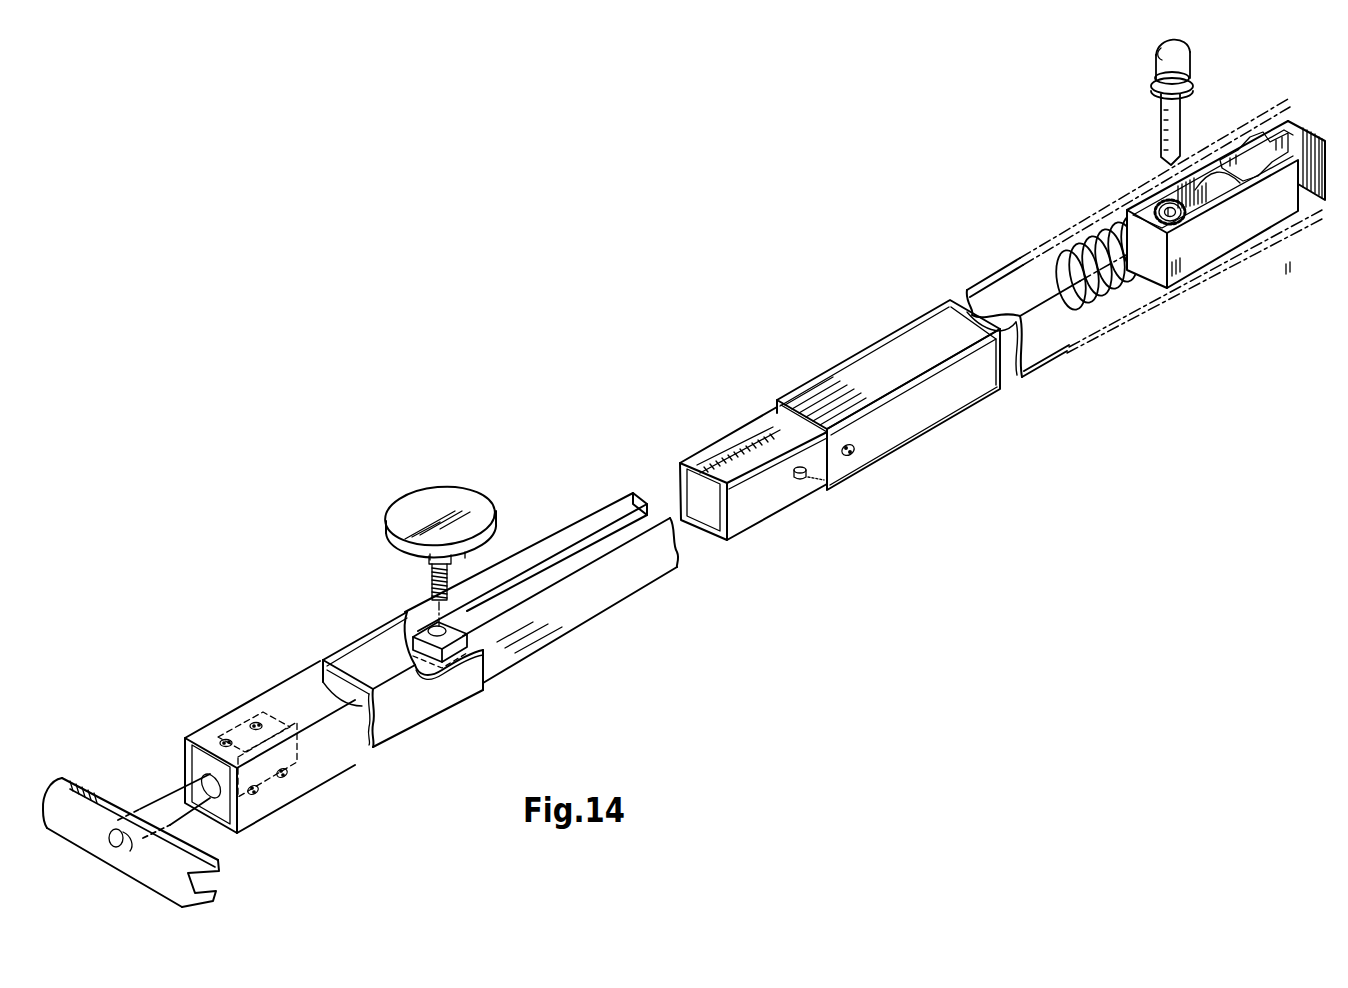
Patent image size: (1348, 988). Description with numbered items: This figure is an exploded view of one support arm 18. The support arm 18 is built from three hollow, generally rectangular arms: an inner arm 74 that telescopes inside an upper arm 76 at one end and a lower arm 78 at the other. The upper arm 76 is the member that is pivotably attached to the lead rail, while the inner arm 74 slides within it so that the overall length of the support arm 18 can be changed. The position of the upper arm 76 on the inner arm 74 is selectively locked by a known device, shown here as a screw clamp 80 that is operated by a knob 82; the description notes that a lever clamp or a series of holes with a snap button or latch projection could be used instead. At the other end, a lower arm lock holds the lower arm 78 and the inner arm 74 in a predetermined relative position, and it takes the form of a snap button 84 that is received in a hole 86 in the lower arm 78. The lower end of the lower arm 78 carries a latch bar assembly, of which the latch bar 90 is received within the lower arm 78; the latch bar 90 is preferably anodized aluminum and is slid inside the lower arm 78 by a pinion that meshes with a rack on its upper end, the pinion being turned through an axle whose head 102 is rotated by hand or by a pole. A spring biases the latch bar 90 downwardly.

The support arm 18 is at (636, 443).
The inner arm 74 is at (763, 491).
The upper arm 76 is at (391, 749).
The lower arm 78 is at (888, 400).
The screw clamp 80 is at (428, 620).
The knob 82 is at (417, 484).
The snap button 84 is at (806, 480).
The hole 86 is at (856, 447).
The latch bar 90 is at (1311, 207).
The head 102 is at (1195, 83).